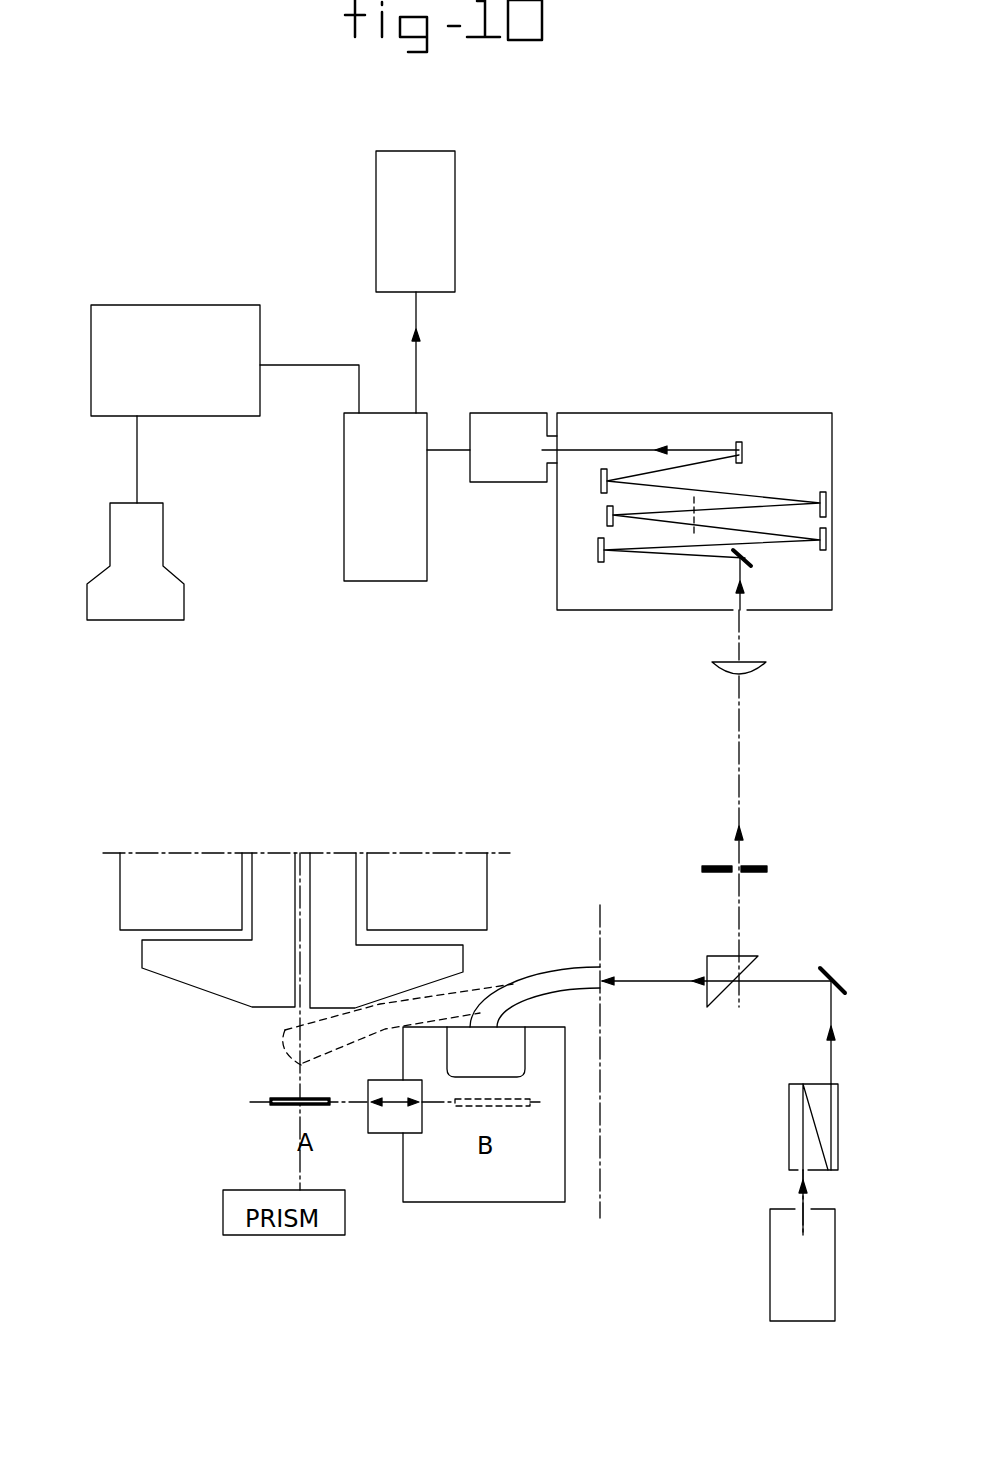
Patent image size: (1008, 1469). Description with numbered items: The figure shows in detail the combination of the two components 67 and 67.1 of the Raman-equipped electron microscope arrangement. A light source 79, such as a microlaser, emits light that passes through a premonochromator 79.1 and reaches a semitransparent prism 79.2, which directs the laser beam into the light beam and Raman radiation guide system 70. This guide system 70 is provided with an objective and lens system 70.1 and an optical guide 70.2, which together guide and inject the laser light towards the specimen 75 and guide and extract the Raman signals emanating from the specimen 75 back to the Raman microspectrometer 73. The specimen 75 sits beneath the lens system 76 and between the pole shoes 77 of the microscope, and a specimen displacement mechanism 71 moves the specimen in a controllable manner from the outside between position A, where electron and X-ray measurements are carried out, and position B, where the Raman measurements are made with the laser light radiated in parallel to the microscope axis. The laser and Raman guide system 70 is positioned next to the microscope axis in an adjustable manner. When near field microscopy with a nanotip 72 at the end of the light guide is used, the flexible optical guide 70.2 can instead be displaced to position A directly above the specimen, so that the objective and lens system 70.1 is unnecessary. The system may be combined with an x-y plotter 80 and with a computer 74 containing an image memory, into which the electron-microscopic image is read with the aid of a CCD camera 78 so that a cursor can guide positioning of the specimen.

The component 67 is at (588, 795).
The component 67.1 is at (510, 1208).
The light beam and Raman radiation guide system 70 is at (565, 1170).
The objective and lens system 70.1 is at (515, 1050).
The optical guide 70.2 is at (533, 977).
The specimen displacement mechanism 71 is at (398, 1133).
The nanotip 72 is at (303, 1068).
The Raman microspectrometer 73 is at (575, 517).
The computer 74 is at (192, 314).
The specimen 75 is at (290, 1098).
The lens system 76 is at (185, 878).
The pole shoes 77 is at (208, 980).
The CCD camera 78 is at (155, 527).
The light source 79 is at (785, 1253).
The premonochromator 79.1 is at (838, 1105).
The semitransparent prism 79.2 is at (743, 958).
The x-y plotter 80 is at (446, 198).